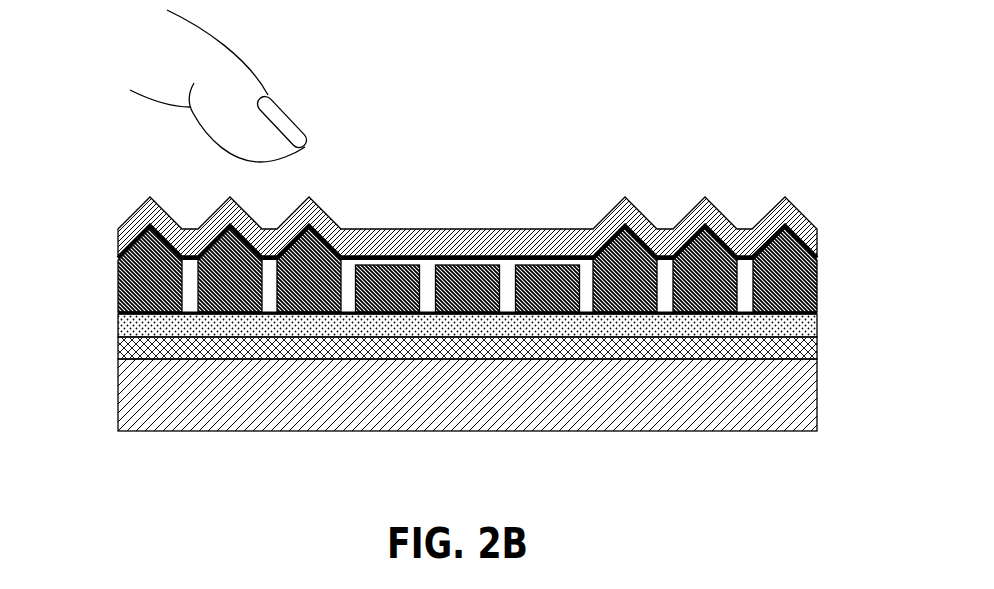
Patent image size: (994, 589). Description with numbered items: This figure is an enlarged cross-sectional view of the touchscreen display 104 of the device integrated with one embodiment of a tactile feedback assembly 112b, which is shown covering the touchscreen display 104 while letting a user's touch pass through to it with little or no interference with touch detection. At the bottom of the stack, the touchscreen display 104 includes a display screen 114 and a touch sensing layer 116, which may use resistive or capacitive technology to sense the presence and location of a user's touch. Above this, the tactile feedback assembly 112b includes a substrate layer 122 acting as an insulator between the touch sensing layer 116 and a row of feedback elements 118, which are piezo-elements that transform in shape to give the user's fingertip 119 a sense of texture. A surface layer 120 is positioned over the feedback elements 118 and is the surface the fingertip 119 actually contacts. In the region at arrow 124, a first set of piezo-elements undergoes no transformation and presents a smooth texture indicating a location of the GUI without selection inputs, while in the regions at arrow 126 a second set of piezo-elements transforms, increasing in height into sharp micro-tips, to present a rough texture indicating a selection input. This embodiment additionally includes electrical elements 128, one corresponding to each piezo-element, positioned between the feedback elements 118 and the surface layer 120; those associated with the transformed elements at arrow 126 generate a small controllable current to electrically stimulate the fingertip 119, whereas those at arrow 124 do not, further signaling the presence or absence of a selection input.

The touchscreen display 104 is at (112, 337).
The tactile feedback assembly 112b is at (112, 238).
The display screen 114 is at (817, 398).
The touch sensing layer 116 is at (817, 353).
The feedback elements 118 is at (501, 244).
The user's fingertip 119 is at (226, 150).
The surface layer 120 is at (817, 238).
The substrate layer 122 is at (817, 323).
The arrow 124 is at (460, 166).
The arrow 126 is at (680, 146).
The electrical elements 128 is at (817, 258).